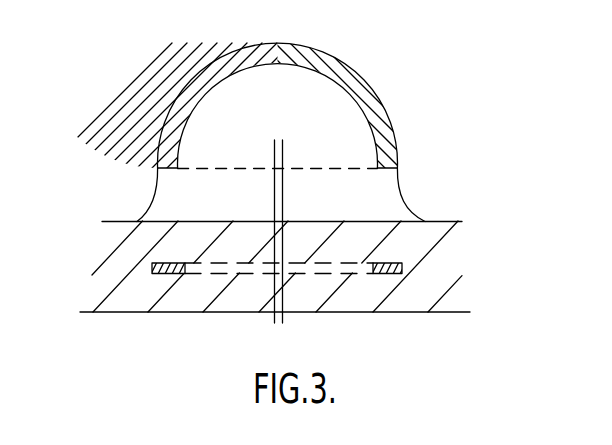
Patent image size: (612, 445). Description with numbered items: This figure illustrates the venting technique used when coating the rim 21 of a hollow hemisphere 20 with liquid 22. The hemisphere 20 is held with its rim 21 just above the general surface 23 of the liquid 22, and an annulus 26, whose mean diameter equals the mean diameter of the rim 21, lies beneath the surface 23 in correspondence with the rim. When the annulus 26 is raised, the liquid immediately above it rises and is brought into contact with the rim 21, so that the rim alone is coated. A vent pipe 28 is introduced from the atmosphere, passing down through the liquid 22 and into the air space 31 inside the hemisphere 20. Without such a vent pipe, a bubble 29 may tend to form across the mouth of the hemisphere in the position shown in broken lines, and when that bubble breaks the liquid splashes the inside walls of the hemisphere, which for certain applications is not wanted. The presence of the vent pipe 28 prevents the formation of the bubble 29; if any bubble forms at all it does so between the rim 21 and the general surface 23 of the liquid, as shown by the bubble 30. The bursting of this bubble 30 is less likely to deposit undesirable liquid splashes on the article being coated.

The hemisphere 20 is at (321, 59).
The rim 21 is at (162, 149).
The liquid 22 is at (440, 290).
The surface of the liquid 23 is at (110, 221).
The annulus 26 is at (153, 274).
The vent pipe 28 is at (273, 312).
The bubble 29 is at (323, 168).
The bubble 30 is at (157, 192).
The air space 31 is at (228, 110).